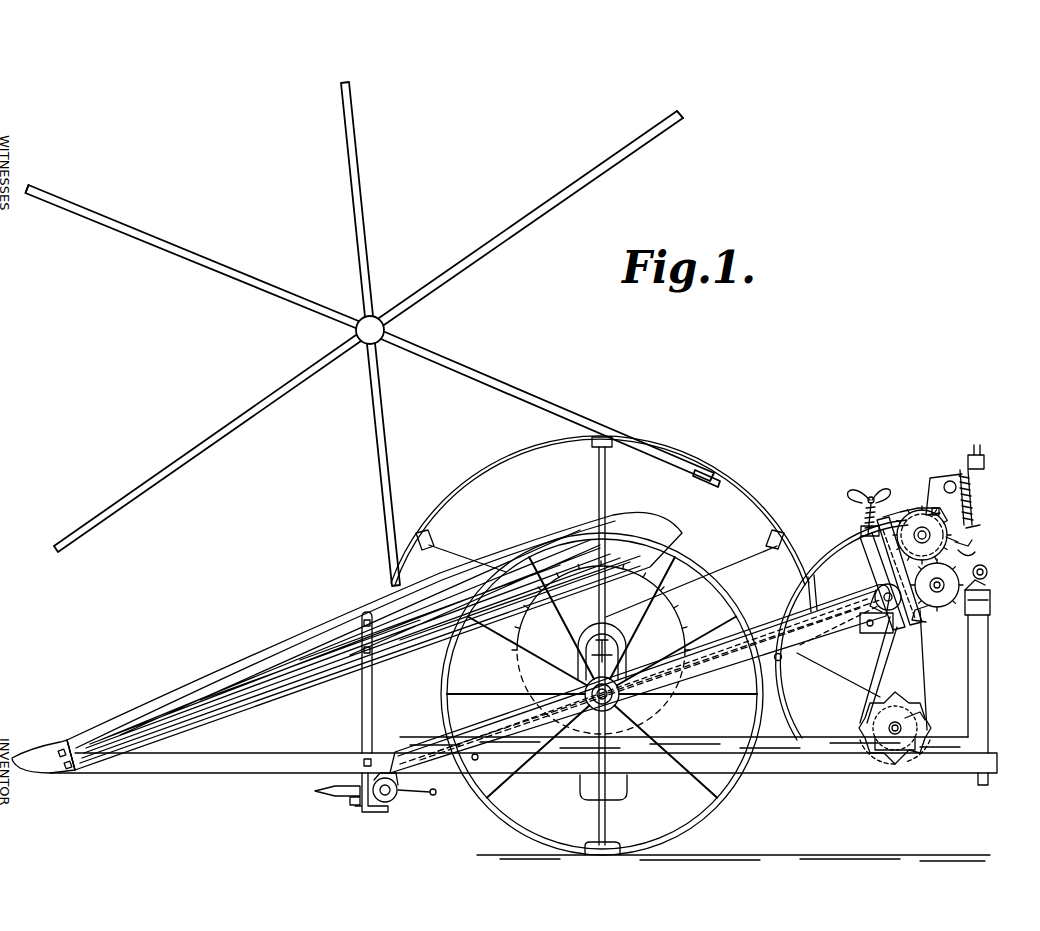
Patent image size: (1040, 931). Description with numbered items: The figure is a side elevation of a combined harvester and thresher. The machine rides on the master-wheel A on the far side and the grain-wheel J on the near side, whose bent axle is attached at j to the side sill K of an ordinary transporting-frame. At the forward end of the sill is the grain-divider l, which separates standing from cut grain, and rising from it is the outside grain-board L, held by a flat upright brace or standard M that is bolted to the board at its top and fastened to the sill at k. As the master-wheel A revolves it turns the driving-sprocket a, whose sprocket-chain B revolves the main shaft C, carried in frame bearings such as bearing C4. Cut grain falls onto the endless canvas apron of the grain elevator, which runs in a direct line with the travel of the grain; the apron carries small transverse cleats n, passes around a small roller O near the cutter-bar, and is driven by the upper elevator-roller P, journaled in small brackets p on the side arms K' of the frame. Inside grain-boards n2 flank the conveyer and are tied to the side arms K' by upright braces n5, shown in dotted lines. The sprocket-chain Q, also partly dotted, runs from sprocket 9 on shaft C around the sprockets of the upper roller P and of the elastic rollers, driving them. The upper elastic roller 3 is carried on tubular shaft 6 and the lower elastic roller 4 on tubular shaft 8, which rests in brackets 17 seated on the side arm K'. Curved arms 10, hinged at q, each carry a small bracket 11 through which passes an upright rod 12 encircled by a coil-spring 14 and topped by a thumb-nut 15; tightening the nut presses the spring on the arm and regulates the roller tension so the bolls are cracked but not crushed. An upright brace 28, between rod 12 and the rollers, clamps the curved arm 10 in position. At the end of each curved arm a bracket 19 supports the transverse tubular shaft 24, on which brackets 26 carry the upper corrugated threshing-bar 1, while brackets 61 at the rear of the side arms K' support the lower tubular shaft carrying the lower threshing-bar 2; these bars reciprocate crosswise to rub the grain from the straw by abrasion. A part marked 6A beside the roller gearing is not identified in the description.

The master-wheel A is at (600, 526).
The outside grain-board L is at (374, 641).
The flat upright brace or standard M is at (362, 700).
The attachment point of brace to side sill k is at (363, 761).
The side sill K is at (523, 761).
The grain-divider l is at (45, 772).
The transverse slats or cleats n is at (398, 795).
The small roller O is at (400, 800).
The driving-sprocket a is at (522, 671).
The axle attachment point j is at (597, 748).
The grain-wheel J is at (752, 777).
The side arms of frame K' is at (640, 679).
The sprocket-chain B is at (842, 630).
The pivotal hinge of curved arms q is at (782, 660).
The brackets or bearings p is at (845, 655).
The sprocket-chain Q is at (925, 660).
The inside grain boards or guides n2 is at (778, 606).
The upright braces n5 is at (845, 618).
The curved arms 10 is at (826, 572).
The upright rod or standard 12 is at (892, 560).
The upright brace or supporting-arm 28 is at (905, 568).
The upper elevator-roller P is at (878, 594).
The small bracket 11 is at (861, 531).
The coil-spring 14 is at (866, 516).
The thumb-nut 15 is at (860, 499).
The tubular shaft 6 is at (918, 528).
The bracket 19 is at (934, 508).
The transverse tubular shaft 24 is at (947, 483).
The brackets 26 is at (970, 470).
The upper elastic roller 3 is at (947, 537).
The upper threshing-bar 1 is at (968, 545).
The lower threshing-bar 2 is at (975, 552).
The pin 6A is at (988, 573).
The lower elastic roller 4 is at (978, 590).
The brackets 61 is at (990, 608).
The tubular shaft or core 8 is at (936, 592).
The brackets 17 is at (941, 592).
The sprocket 9 is at (897, 703).
The axle or main shaft C is at (912, 727).
The bearing C4 is at (905, 718).